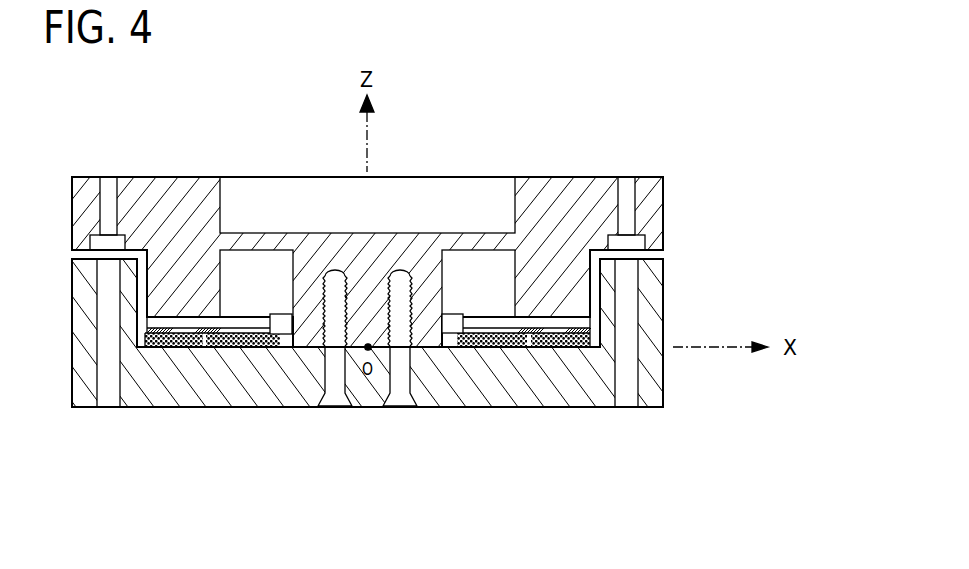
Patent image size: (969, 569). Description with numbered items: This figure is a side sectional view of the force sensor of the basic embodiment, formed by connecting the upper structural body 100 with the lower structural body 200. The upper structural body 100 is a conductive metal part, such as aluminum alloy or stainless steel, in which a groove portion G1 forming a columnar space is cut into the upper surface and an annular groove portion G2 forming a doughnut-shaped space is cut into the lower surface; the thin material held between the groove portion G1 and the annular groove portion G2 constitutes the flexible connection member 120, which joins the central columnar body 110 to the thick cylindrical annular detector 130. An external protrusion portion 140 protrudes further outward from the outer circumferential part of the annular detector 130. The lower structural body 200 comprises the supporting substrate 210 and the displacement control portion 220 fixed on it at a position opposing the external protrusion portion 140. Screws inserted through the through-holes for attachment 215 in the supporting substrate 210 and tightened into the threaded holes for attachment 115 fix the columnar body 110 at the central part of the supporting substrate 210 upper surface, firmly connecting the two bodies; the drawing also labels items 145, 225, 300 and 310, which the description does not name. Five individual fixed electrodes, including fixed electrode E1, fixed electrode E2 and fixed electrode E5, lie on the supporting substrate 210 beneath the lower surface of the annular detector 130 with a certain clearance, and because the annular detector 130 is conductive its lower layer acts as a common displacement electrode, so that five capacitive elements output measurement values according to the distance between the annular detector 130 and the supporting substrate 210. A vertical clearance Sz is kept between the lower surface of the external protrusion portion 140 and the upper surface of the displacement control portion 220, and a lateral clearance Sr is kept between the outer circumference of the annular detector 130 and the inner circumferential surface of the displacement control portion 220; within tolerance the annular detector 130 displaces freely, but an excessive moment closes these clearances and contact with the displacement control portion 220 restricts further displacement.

The upper structural body 100 is at (70, 151).
The columnar body 110 is at (393, 240).
The threaded hole for attachment 115 is at (400, 298).
The flexible connection member 120 is at (470, 243).
The annular detector 130 is at (537, 200).
The external protrusion portion 140 is at (600, 207).
The bolt hole 145 is at (627, 187).
The lower structural body 200 is at (71, 435).
The supporting substrate 210 is at (245, 390).
The through-hole for attachment 215 is at (396, 396).
The displacement control portion 220 is at (648, 310).
The bolt 225 is at (109, 398).
The electrode portion 300 is at (475, 347).
The electrode terminal block 310 is at (281, 334).
The individual fixed electrode E1 is at (575, 347).
The individual fixed electrode E2 is at (157, 347).
The individual fixed electrode E5 is at (204, 333).
The groove portion G1 is at (318, 187).
The annular groove portion G2 is at (262, 264).
The vertical clearance Sz is at (641, 238).
The lateral clearance Sr is at (612, 294).